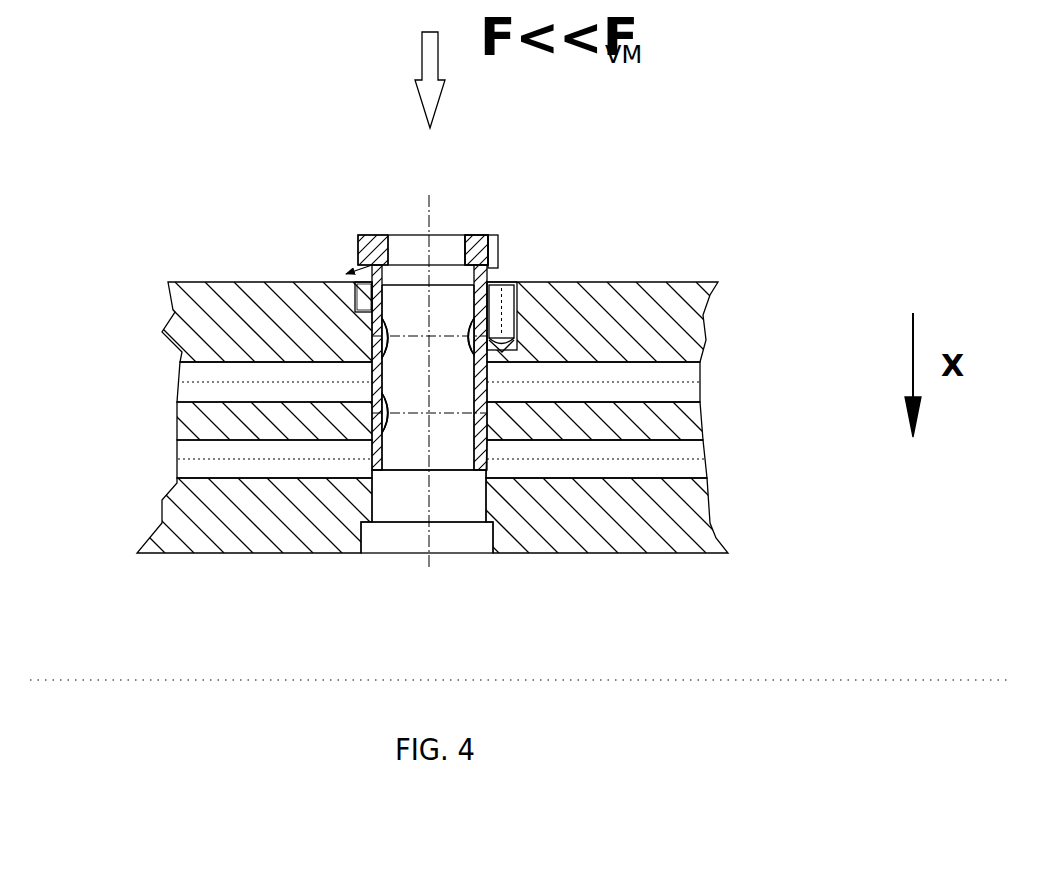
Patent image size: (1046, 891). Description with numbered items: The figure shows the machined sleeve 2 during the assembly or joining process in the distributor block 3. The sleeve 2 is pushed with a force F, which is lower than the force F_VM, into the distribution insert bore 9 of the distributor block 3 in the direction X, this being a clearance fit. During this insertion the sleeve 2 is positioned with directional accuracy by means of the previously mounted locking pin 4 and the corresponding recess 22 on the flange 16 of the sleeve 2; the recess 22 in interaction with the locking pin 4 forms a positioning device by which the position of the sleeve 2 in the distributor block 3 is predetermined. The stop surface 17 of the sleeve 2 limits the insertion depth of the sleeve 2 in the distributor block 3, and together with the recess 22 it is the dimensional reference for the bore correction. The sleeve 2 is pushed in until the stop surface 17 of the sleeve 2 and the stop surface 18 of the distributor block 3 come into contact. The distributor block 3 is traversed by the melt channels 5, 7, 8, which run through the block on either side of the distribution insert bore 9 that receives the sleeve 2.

The sleeve 2 is at (371, 373).
The distributor block 3 is at (652, 518).
The locking pin 4 is at (507, 296).
The melt channel 5 is at (185, 448).
The melt channel 7 is at (668, 447).
The melt channel 8 is at (683, 375).
The distribution insert bore 9 is at (429, 312).
The flange 16 is at (467, 261).
The stop surface 17 is at (340, 278).
The stop surface 18 is at (314, 233).
The recess 22 is at (497, 250).